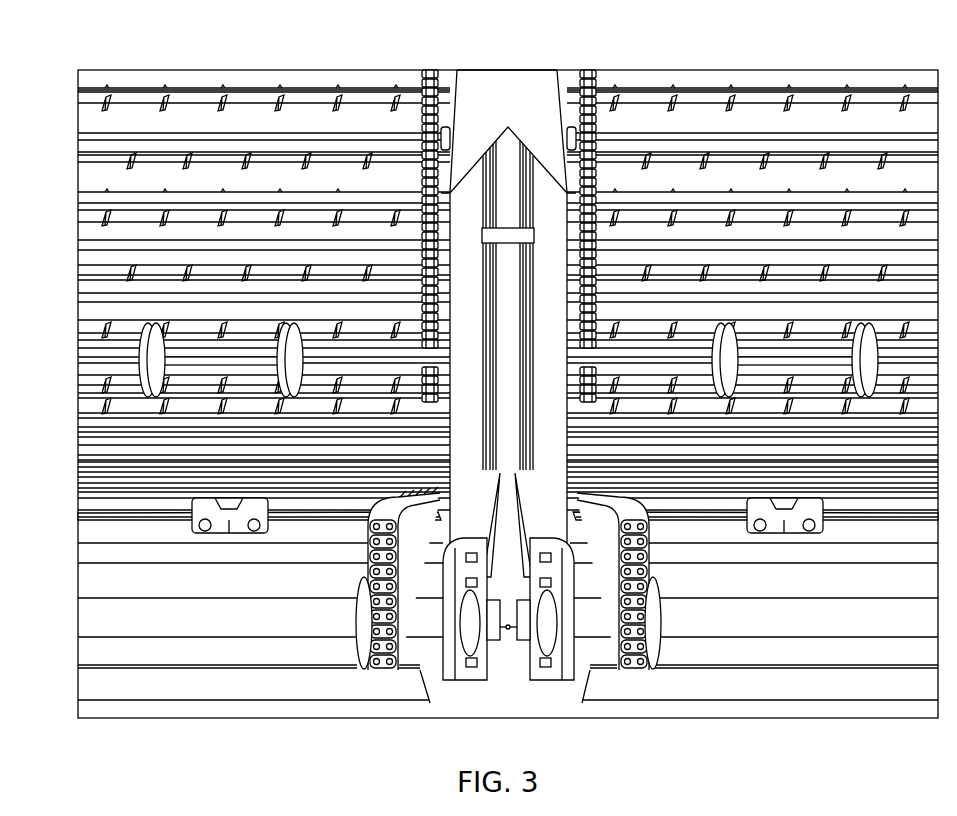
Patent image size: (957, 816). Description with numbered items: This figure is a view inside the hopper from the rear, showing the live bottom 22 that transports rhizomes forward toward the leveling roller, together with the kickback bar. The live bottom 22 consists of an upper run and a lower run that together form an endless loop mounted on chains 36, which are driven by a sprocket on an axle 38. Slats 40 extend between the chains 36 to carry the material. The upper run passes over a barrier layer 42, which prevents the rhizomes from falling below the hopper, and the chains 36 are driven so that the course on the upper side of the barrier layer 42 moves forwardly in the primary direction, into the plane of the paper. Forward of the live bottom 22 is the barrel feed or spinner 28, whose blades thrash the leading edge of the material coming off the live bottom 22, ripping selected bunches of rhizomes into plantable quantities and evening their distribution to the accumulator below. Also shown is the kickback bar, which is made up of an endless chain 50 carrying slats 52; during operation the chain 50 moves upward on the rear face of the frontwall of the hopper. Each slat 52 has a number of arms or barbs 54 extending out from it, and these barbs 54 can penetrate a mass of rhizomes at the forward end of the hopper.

The live bottom 22 is at (317, 518).
The barrel feed or spinner 28 is at (277, 65).
The chains 36 is at (353, 653).
The axle 38 is at (193, 627).
The slats 40 is at (132, 518).
The barrier layer 42 is at (93, 535).
The endless chain 50 is at (435, 97).
The slats 52 is at (173, 90).
The arms or barbs 54 is at (167, 100).